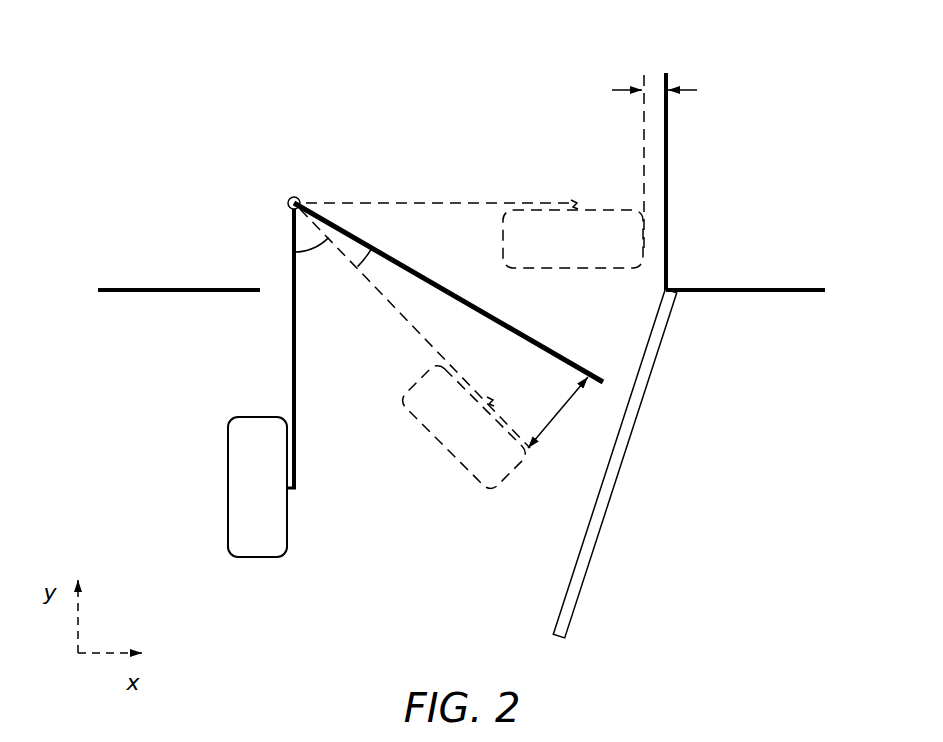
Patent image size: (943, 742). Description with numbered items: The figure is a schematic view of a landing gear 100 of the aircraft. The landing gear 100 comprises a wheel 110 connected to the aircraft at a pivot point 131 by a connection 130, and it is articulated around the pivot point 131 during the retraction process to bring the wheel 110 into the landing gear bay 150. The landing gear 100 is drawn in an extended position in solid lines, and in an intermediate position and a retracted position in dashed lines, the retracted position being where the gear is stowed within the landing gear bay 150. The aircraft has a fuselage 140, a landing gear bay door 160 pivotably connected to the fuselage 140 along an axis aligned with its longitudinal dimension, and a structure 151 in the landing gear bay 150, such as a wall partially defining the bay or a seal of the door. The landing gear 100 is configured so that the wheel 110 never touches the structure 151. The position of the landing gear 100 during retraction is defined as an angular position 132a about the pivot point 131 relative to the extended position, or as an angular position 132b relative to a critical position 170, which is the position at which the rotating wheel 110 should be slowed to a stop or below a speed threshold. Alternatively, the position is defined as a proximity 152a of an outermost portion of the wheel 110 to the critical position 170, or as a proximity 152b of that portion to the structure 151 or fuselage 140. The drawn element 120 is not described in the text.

The landing gear 100 is at (195, 165).
The wheel 110 is at (226, 512).
The end effector 120 is at (292, 495).
The connection 130 is at (291, 397).
The pivot point 131 is at (297, 195).
The angular position 132a is at (316, 250).
The angular position 132b is at (372, 258).
The fuselage 140 is at (178, 286).
The landing gear bay 150 is at (458, 156).
The structure 151 is at (670, 188).
The proximity 152a is at (566, 405).
The proximity 152b is at (688, 81).
The landing gear bay door 160 is at (605, 535).
The critical position 170 is at (551, 345).